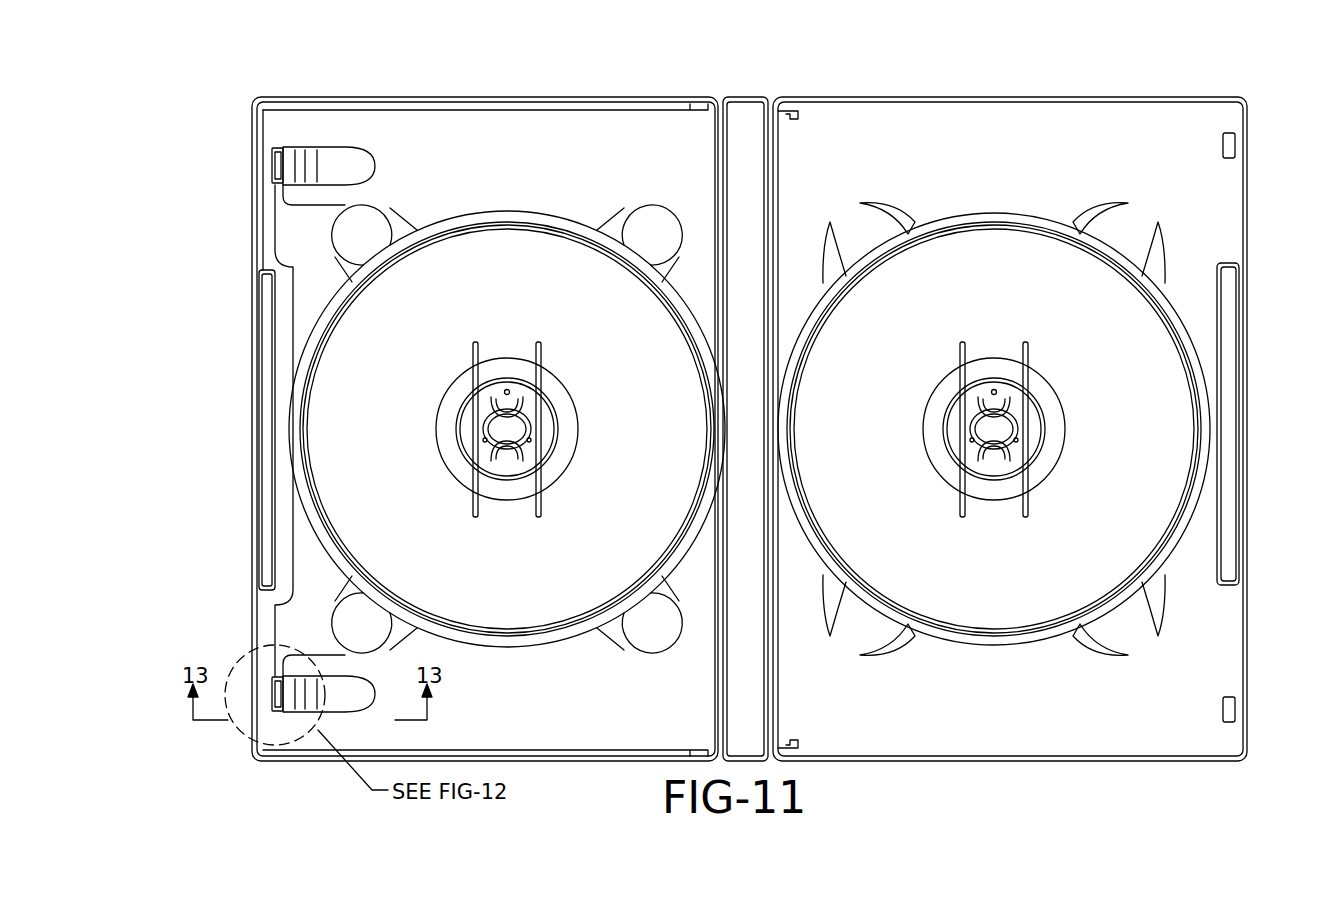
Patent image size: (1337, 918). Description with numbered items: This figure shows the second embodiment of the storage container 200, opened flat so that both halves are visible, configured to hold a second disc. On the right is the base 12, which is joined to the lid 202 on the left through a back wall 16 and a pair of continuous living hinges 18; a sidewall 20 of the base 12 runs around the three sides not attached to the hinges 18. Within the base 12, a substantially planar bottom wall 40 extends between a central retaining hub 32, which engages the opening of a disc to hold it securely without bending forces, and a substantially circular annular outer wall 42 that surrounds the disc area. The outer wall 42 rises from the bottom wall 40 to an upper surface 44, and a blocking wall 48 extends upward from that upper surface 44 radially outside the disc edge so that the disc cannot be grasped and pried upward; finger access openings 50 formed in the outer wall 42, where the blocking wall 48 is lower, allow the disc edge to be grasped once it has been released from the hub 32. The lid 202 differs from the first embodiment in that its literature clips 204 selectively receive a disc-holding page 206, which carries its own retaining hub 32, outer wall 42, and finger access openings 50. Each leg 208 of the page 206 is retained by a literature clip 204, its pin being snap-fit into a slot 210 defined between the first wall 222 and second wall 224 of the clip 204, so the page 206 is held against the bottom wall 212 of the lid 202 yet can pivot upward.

The base 12 is at (1050, 140).
The back wall 16 is at (748, 118).
The living hinges 18 is at (718, 130).
The sidewall 20 is at (1140, 85).
The retaining hub 32 is at (566, 362).
The bottom wall 40 is at (1172, 420).
The outer wall 42 is at (1192, 318).
The upper surface 44 is at (1172, 540).
The blocking wall 48 is at (1202, 510).
The finger access openings 50 is at (636, 222).
The storage container 200 is at (305, 772).
The lid 202 is at (478, 143).
The literature clips 204 is at (352, 148).
The disc-holding page 206 is at (530, 652).
The leg 208 is at (290, 222).
The slot 210 is at (282, 150).
The bottom wall 212 is at (566, 150).
The first wall 222 is at (272, 160).
The second wall 224 is at (278, 170).